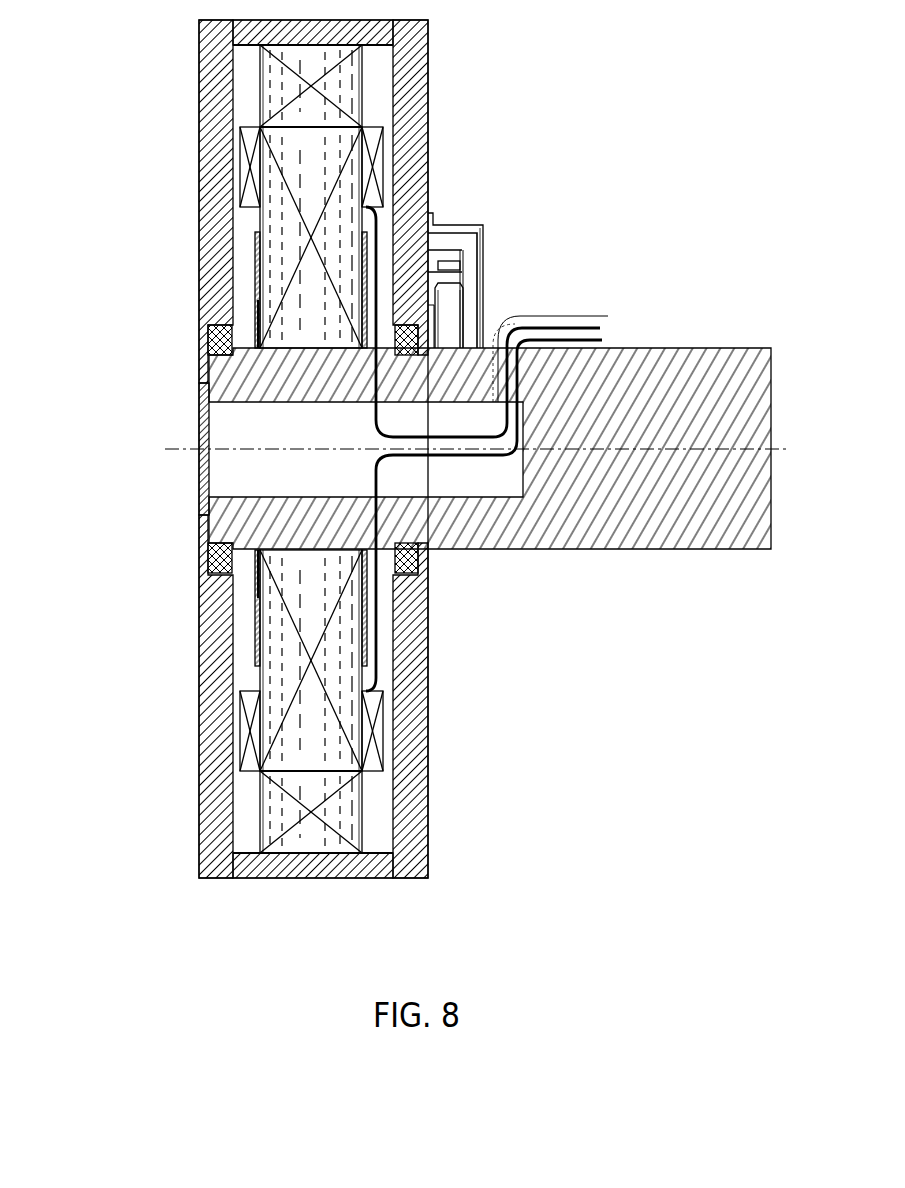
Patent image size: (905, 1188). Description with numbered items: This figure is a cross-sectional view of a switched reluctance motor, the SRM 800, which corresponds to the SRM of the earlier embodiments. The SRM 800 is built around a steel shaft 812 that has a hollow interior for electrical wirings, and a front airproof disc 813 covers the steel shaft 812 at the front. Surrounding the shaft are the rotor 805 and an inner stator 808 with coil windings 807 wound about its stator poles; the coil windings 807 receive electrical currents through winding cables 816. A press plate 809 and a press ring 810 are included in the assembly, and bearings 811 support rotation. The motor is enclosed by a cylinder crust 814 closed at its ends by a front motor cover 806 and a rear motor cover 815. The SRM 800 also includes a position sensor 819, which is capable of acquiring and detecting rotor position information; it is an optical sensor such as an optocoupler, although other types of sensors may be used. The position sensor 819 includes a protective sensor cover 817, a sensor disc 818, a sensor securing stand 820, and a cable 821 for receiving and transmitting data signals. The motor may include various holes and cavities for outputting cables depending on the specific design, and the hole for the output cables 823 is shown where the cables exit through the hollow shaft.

The SRM 800 is at (565, 675).
The rotor 805 is at (282, 75).
The front motor cover 806 is at (220, 105).
The coil windings 807 is at (250, 153).
The inner stator 808 is at (280, 198).
The press plate 809 is at (258, 245).
The press ring 810 is at (258, 322).
The bearings 811 is at (210, 340).
The steel shaft 812 is at (230, 383).
The front airproof disc 813 is at (203, 430).
The cylinder crust 814 is at (413, 37).
The rear motor cover 815 is at (400, 78).
The winding cables 816 is at (433, 213).
The protective sensor cover 817 is at (431, 235).
The sensor disc 818 is at (430, 260).
The position sensor 819 is at (462, 263).
The sensor securing stand 820 is at (436, 288).
The cable 821 is at (433, 308).
The hole for the output cables 823 is at (498, 327).